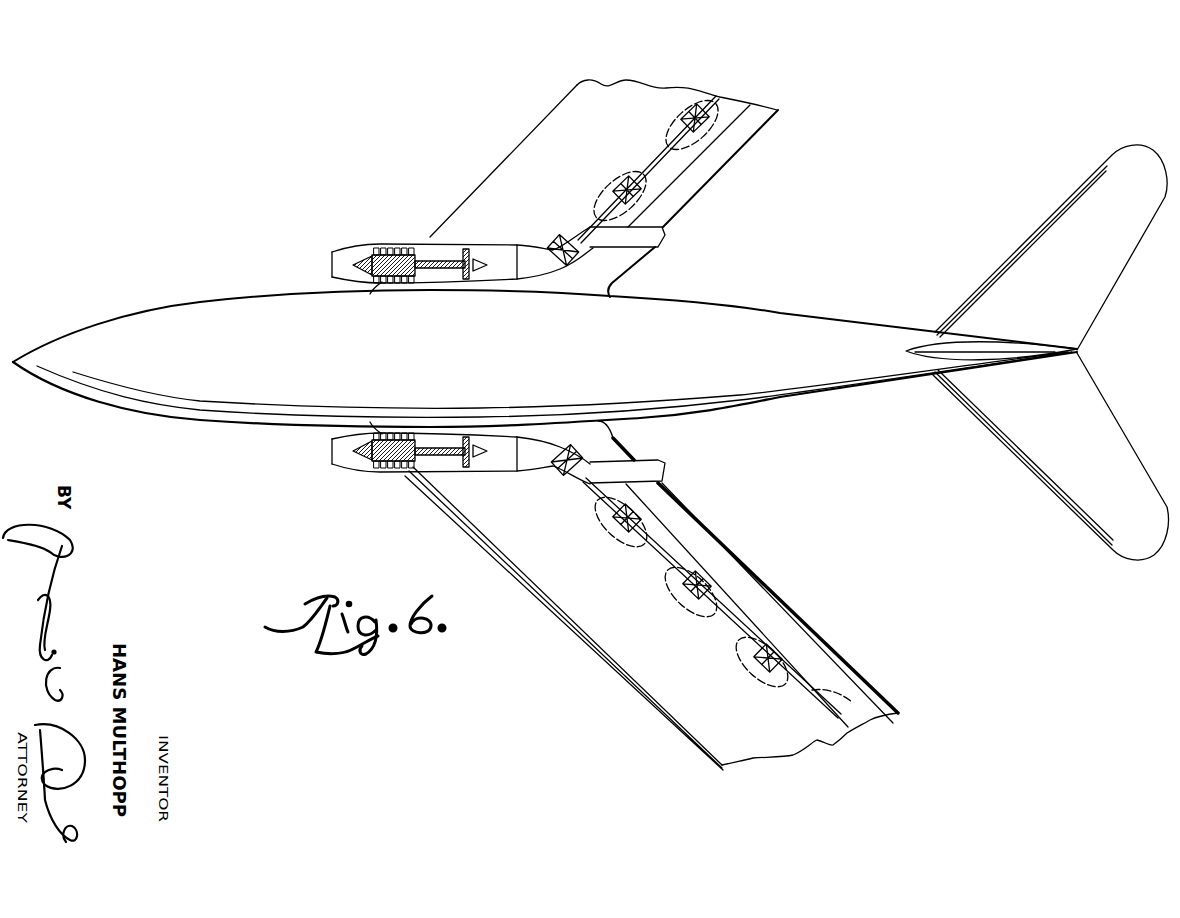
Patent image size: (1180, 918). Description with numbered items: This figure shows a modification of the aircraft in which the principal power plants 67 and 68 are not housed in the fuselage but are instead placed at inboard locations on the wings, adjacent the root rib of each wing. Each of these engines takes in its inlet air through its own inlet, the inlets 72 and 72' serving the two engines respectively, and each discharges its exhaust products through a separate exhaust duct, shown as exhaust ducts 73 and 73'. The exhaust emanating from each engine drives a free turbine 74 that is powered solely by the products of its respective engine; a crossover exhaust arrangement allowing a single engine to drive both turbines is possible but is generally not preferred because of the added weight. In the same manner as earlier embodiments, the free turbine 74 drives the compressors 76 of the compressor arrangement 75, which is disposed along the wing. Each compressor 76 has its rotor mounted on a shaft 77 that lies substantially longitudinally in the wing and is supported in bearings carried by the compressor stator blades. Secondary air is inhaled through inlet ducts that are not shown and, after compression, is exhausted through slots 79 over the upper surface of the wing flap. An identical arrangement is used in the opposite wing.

The principal power plant 67 is at (384, 470).
The principal power plant 68 is at (389, 248).
The inlet 72 is at (446, 464).
The inlet 72' is at (445, 255).
The exhaust duct 73 is at (640, 468).
The exhaust duct 73' is at (627, 244).
The free turbine 74 is at (568, 468).
The compressor arrangement 75 is at (750, 592).
The compressor 76 is at (785, 664).
The shaft 77 is at (650, 532).
The slots 79 is at (822, 683).